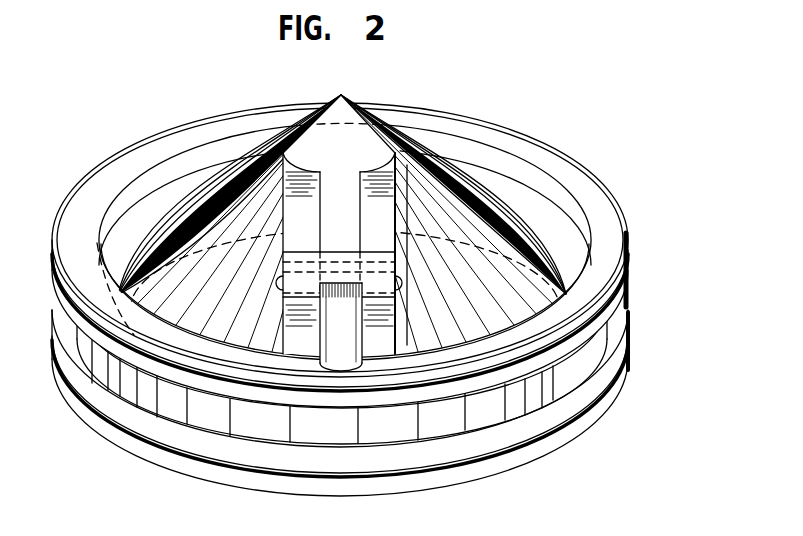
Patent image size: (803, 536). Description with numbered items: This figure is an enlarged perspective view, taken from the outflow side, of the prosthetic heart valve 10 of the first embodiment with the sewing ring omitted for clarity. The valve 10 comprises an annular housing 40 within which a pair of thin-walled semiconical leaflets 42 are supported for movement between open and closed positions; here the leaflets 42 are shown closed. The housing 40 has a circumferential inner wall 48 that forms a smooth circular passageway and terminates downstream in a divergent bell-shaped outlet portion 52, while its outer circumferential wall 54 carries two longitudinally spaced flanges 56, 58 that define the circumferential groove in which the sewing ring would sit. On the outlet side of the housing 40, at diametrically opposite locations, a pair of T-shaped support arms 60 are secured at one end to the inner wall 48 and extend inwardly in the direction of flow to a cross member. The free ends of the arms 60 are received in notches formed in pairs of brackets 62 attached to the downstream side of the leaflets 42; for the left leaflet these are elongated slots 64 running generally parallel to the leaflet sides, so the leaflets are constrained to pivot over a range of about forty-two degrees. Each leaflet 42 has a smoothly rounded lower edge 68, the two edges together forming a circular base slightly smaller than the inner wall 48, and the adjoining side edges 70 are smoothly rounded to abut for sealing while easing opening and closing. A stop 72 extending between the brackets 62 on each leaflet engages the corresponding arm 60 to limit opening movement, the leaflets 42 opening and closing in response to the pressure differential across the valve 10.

The prosthetic heart valve 10 is at (359, 281).
The annular housing 40 is at (359, 281).
The semiconical leaflets 42 is at (258, 155).
The circumferential inner wall 48 is at (470, 178).
The divergent bell-shaped outlet portion 52 is at (432, 127).
The outer circumferential wall 54 is at (156, 393).
The flange 56 is at (606, 398).
The flange 58 is at (359, 237).
The T-shaped support arms 60 is at (350, 347).
The brackets 62 is at (350, 233).
The elongated slots 64 is at (300, 316).
The rounded lower edge 68 is at (124, 255).
The adjoining side edges 70 is at (252, 180).
The stop 72 is at (338, 260).